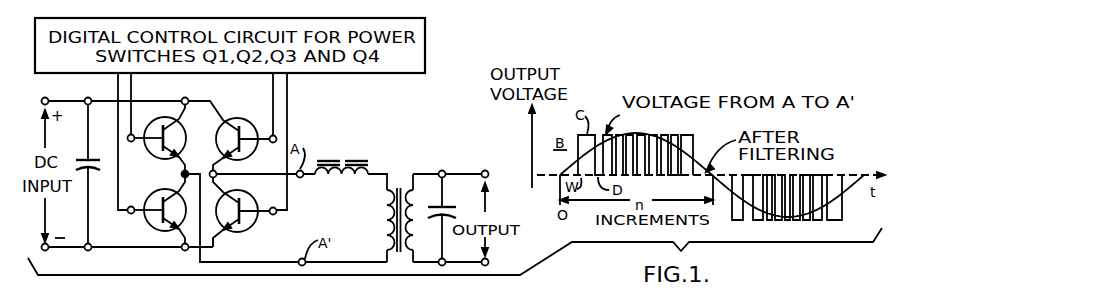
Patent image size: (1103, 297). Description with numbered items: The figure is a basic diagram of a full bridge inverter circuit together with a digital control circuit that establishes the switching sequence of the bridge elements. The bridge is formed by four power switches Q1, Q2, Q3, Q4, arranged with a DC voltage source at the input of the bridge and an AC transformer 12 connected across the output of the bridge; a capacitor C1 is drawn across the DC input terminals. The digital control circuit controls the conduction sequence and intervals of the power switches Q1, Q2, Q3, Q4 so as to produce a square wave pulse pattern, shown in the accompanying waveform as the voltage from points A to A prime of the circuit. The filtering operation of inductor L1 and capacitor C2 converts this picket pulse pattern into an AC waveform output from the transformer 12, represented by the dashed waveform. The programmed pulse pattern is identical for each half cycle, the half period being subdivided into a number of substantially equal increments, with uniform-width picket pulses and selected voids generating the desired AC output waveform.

The AC transformer 12 is at (382, 214).
The power switch Q1 is at (156, 158).
The power switch Q2 is at (152, 228).
The power switch Q3 is at (261, 113).
The power switch Q4 is at (283, 248).
The input filter capacitor C1 is at (104, 171).
The capacitor C2 is at (452, 212).
The inductor L1 is at (341, 158).